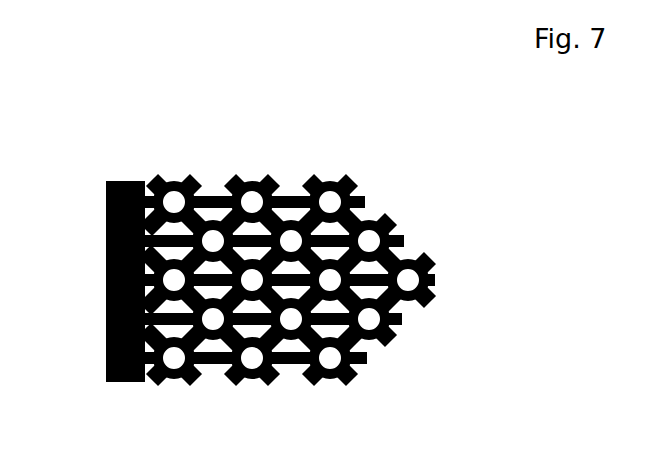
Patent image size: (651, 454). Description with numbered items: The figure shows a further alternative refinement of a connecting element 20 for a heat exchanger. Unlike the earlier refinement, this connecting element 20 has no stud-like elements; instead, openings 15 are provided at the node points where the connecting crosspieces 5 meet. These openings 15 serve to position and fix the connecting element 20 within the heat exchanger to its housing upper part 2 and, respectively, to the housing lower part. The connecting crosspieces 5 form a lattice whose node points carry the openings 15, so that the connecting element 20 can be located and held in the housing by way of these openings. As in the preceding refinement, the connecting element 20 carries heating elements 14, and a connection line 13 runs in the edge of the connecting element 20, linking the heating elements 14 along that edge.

The housing upper part 2 is at (257, 266).
The connecting crosspieces 5 is at (211, 196).
The connection line 13 is at (108, 307).
The heating elements 14 is at (272, 183).
The openings 15 is at (336, 199).
The connecting element 20 is at (313, 266).